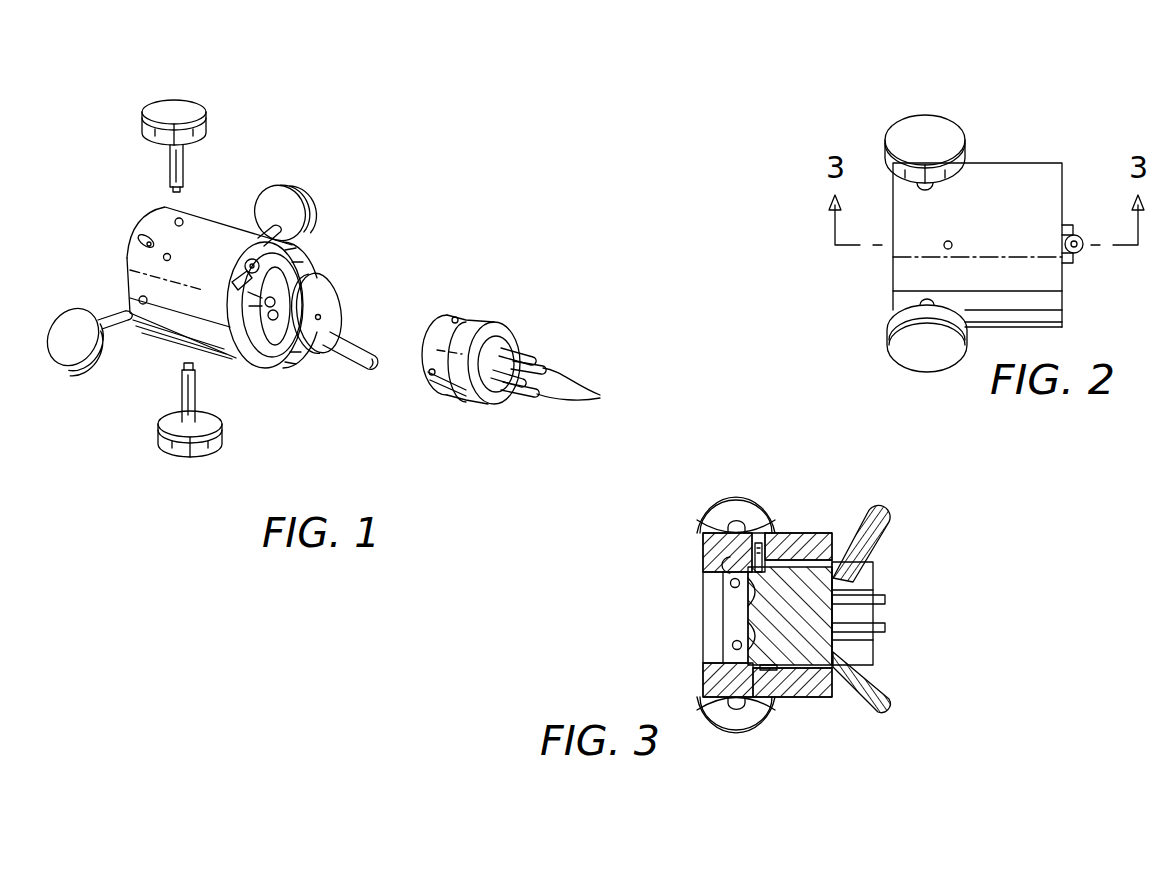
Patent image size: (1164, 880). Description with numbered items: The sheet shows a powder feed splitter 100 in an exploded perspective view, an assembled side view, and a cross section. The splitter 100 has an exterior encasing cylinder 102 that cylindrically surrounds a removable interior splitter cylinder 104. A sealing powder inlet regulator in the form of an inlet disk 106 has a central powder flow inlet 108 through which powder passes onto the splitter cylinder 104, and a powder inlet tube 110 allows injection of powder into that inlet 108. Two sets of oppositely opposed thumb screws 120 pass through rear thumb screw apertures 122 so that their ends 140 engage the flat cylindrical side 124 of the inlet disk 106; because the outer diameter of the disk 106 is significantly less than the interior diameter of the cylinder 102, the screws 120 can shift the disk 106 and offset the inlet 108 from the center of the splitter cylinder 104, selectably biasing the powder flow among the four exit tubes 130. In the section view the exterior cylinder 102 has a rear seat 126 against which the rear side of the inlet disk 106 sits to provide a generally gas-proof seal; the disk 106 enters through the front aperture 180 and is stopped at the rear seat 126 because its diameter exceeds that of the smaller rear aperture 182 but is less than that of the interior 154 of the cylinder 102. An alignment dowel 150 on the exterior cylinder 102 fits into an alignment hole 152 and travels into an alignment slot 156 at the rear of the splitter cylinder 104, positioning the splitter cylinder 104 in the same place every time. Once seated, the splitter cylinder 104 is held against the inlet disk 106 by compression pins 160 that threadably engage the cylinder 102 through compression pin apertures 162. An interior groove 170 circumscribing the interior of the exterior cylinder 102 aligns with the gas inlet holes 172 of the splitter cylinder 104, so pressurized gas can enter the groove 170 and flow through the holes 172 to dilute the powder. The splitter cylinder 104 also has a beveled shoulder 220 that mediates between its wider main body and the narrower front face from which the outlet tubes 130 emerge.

In FIG. 1, the powder feed splitter 100 is at (370, 157).
In FIG. 1, the exterior encasing cylinder 102 is at (232, 204).
In FIG. 2, the exterior encasing cylinder 102 is at (1032, 162).
In FIG. 3, the exterior encasing cylinder 102 is at (838, 697).
In FIG. 1, the interior splitter cylinder 104 is at (505, 305).
In FIG. 1, the sealing inlet disk 106 is at (315, 352).
In FIG. 1, the central powder flow inlet 108 is at (321, 316).
In FIG. 1, the powder inlet tube 110 is at (300, 272).
In FIG. 1, the thumb screws 120 is at (173, 110).
In FIG. 2, the thumb screws 120 is at (922, 137).
In FIG. 3, the thumb screws 120 is at (733, 490).
In FIG. 1, the rear thumb screw apertures 122 is at (182, 219).
In FIG. 1, the flat cylindrical side 124 is at (306, 288).
In FIG. 3, the rear seat 126 is at (727, 565).
In FIG. 1, the exit tubes 130 is at (601, 396).
In FIG. 3, the exit tubes 130 is at (884, 600).
In FIG. 1, the thumb screw ends 140 is at (176, 190).
In FIG. 3, the thumb screw ends 140 is at (730, 581).
In FIG. 1, the alignment dowel 150 is at (140, 244).
In FIG. 3, the alignment dowel 150 is at (787, 558).
In FIG. 1, the alignment hole 152 is at (170, 261).
In FIG. 2, the alignment hole 152 is at (953, 245).
In FIG. 3, the alignment hole 152 is at (762, 562).
In FIG. 1, the interior of the exterior cylinder 154 is at (268, 300).
In FIG. 3, the interior of the exterior cylinder 154 is at (860, 582).
In FIG. 1, the alignment slot 156 is at (460, 390).
In FIG. 1, the compression pins 160 is at (232, 264).
In FIG. 2, the compression pins 160 is at (1082, 252).
In FIG. 3, the compression pins 160 is at (890, 528).
In FIG. 1, the compression pin apertures 162 is at (272, 322).
In FIG. 3, the interior groove 170 is at (773, 672).
In FIG. 1, the gas inlet holes 172 is at (457, 318).
In FIG. 1, the front aperture 180 is at (258, 290).
In FIG. 3, the rear aperture 182 is at (712, 632).
In FIG. 1, the beveled shoulder 220 is at (512, 326).